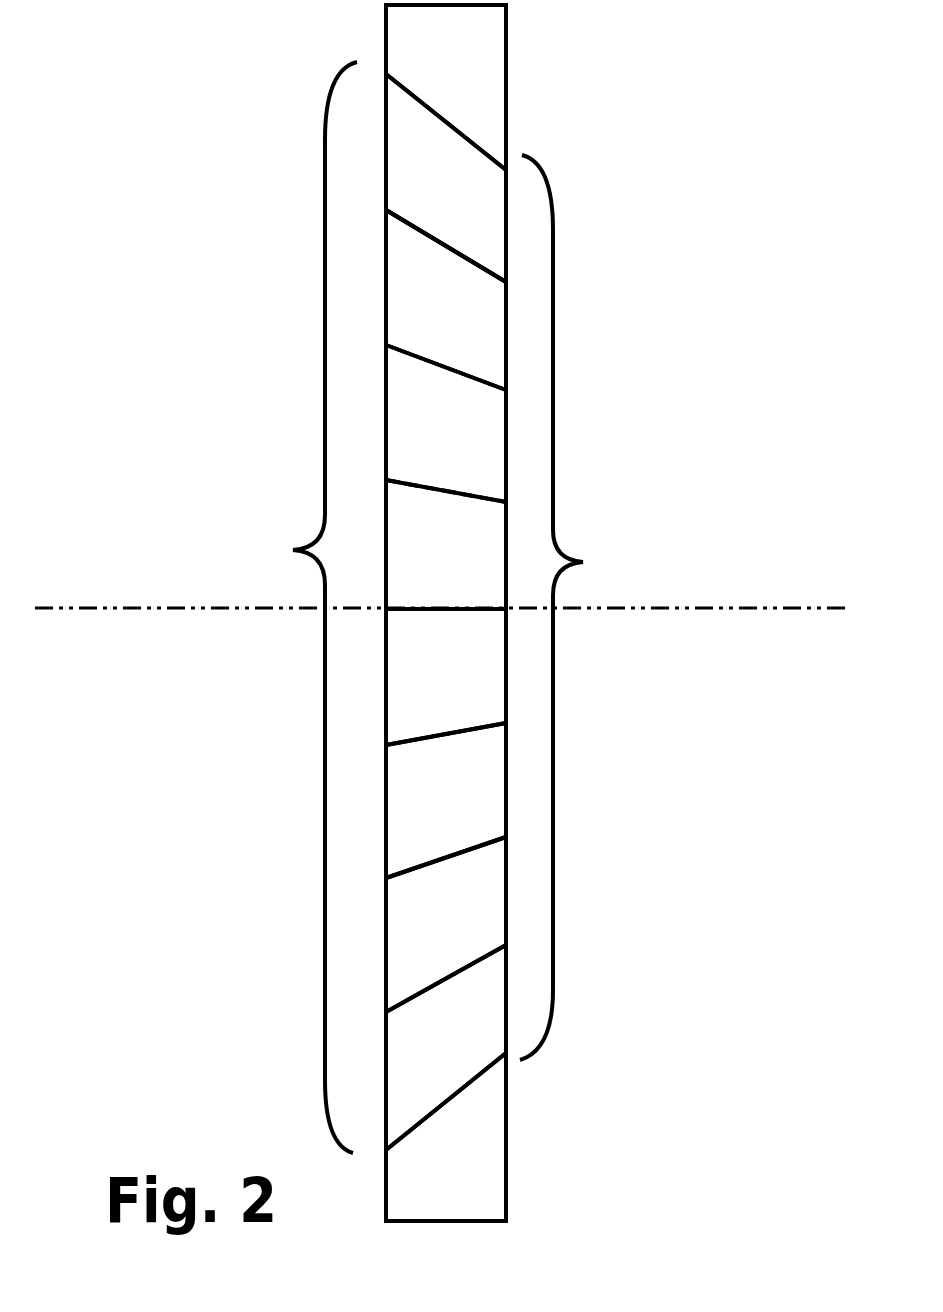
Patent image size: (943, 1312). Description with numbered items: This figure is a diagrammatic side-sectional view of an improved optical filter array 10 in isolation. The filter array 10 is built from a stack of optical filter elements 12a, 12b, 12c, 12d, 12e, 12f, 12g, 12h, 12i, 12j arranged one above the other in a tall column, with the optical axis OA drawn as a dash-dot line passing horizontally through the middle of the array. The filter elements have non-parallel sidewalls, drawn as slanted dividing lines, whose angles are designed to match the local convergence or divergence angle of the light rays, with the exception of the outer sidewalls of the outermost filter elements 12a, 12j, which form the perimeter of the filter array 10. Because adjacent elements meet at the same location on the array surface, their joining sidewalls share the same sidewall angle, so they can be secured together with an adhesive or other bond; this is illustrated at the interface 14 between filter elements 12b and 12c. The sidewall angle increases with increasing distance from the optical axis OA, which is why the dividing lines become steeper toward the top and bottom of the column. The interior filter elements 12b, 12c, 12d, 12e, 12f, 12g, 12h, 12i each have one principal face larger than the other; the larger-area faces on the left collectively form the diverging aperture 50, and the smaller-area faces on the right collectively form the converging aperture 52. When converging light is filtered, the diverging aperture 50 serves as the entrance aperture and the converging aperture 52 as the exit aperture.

The optical filter array 10 is at (126, 433).
The optical filter element 12a is at (477, 72).
The optical filter element 12b is at (477, 199).
The optical filter element 12c is at (477, 313).
The optical filter element 12d is at (477, 443).
The optical filter element 12e is at (477, 569).
The optical filter element 12f is at (477, 688).
The optical filter element 12g is at (477, 806).
The optical filter element 12h is at (477, 926).
The optical filter element 12i is at (477, 1053).
The optical filter element 12j is at (477, 1176).
The interface 14 is at (433, 240).
The diverging aperture 50 is at (302, 607).
The converging aperture 52 is at (578, 607).
The optical axis OA is at (440, 593).